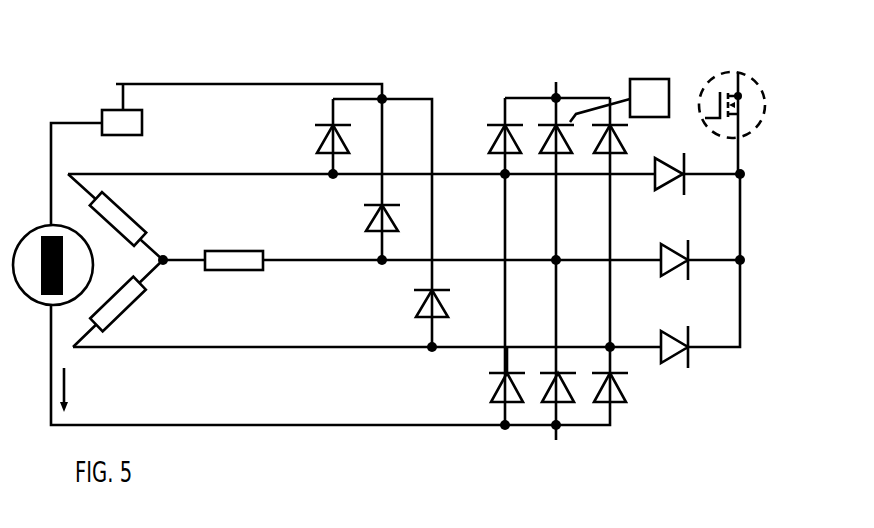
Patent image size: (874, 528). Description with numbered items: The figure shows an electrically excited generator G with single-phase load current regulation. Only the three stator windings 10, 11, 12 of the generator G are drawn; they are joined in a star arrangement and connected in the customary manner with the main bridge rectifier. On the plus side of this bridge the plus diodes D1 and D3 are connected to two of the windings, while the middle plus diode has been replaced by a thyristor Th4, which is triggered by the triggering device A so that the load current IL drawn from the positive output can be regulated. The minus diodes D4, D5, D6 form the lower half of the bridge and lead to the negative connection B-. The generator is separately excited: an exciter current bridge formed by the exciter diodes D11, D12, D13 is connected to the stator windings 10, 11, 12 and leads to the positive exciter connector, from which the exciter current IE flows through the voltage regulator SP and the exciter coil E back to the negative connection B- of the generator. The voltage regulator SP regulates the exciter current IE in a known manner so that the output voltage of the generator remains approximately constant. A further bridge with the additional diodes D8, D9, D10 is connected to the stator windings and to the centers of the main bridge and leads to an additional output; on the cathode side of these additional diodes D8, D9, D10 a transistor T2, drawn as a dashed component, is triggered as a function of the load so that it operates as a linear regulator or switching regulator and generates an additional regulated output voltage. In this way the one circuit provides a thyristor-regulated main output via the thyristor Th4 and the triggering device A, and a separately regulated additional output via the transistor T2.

The voltage regulator SP is at (142, 121).
The exciter coil E is at (64, 246).
The stator winding 11 is at (128, 218).
The stator winding 12 is at (122, 306).
The stator winding 10 is at (215, 256).
The generator G is at (177, 287).
The exciter current IE is at (77, 390).
The exciter diode D11 is at (318, 142).
The exciter diode D12 is at (366, 222).
The exciter diode D13 is at (418, 305).
The plus diode D1 is at (493, 144).
The thyristor Th4 is at (542, 140).
The plus diode D3 is at (618, 138).
The minus diode D4 is at (494, 390).
The minus diode D5 is at (552, 402).
The minus diode D6 is at (618, 400).
The additional diode D8 is at (668, 186).
The additional diode D9 is at (666, 276).
The additional diode D10 is at (667, 362).
The triggering device A is at (619, 100).
The transistor T2 is at (766, 108).
The load current IL is at (575, 80).
The negative connection B- is at (563, 461).